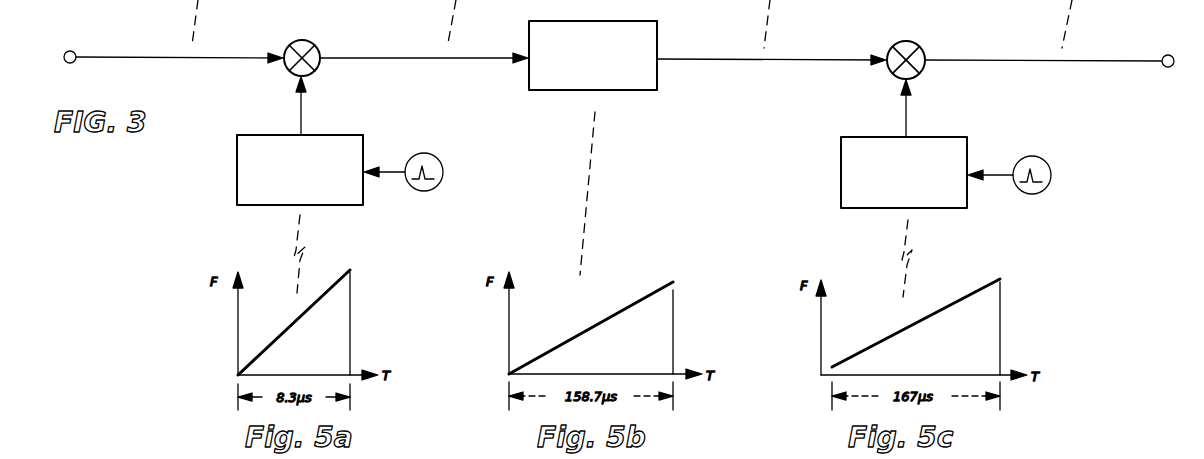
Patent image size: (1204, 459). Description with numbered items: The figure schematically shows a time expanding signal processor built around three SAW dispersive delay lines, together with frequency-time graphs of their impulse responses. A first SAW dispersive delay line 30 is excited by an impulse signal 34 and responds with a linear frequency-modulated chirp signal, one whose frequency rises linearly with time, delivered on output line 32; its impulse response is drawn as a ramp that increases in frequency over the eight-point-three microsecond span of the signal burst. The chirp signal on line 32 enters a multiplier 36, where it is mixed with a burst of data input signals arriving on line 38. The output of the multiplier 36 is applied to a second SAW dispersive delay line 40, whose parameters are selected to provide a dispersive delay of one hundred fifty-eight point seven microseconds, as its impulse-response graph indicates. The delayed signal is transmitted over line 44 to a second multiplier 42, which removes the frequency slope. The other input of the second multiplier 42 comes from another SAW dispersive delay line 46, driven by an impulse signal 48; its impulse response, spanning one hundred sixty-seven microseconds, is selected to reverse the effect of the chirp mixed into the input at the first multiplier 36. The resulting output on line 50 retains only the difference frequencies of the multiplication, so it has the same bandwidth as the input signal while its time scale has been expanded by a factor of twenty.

The first SAW dispersive delay line 30 is at (255, 135).
The output line 32 is at (301, 110).
The impulse signal 34 is at (432, 155).
The multiplier 36 is at (316, 46).
The line 38 is at (113, 57).
The second SAW dispersive delay line 40 is at (632, 90).
The second multiplier 42 is at (921, 50).
The line 44 is at (766, 59).
The SAW dispersive delay line 46 is at (935, 137).
The impulse signal 48 is at (1045, 162).
The line 50 is at (1098, 61).